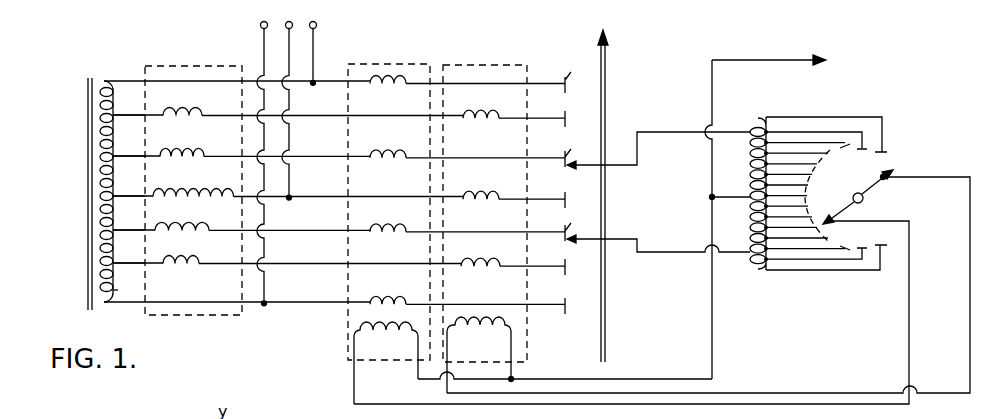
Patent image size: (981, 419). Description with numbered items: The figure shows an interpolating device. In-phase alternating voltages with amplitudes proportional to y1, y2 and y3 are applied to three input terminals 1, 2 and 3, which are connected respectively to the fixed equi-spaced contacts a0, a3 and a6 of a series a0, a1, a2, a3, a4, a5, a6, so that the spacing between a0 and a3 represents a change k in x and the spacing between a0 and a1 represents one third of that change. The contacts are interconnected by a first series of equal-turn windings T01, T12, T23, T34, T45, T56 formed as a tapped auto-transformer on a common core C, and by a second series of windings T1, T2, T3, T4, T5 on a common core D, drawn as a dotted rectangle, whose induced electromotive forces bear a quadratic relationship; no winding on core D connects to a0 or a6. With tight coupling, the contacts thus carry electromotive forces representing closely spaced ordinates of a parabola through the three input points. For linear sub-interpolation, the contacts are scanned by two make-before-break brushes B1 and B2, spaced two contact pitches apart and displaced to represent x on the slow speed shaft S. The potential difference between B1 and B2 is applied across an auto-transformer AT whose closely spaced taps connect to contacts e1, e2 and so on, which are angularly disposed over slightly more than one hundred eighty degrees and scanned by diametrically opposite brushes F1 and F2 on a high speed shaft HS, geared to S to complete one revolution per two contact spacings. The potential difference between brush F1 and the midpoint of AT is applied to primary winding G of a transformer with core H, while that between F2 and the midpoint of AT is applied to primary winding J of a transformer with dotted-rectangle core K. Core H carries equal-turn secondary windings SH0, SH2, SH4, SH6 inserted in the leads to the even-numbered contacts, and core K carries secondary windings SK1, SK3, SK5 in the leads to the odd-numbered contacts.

The common core C is at (86, 292).
The common core D is at (196, 316).
The transformer winding T56 is at (110, 114).
The transformer winding T45 is at (110, 152).
The transformer winding T34 is at (110, 191).
The transformer winding T23 is at (110, 226).
The transformer winding T12 is at (110, 259).
The transformer winding T01 is at (110, 296).
The transformer winding T5 is at (182, 112).
The transformer winding T4 is at (182, 151).
The transformer winding T3 is at (182, 190).
The transformer winding T2 is at (180, 226).
The transformer winding T1 is at (185, 260).
The input terminal 1 is at (260, 29).
The input terminal 2 is at (288, 29).
The input terminal 3 is at (315, 29).
The alternating voltage amplitude y1 is at (273, 26).
The alternating voltage amplitude y2 is at (298, 26).
The alternating voltage amplitude y3 is at (322, 26).
The transformer core H is at (345, 316).
The secondary winding SH6 is at (406, 76).
The secondary winding SH4 is at (388, 142).
The secondary winding SH2 is at (388, 218).
The secondary winding SH0 is at (388, 289).
The transformer core K is at (530, 337).
The secondary winding SK5 is at (481, 106).
The secondary winding SK3 is at (481, 183).
The secondary winding SK1 is at (480, 252).
The fixed contact a6 is at (577, 74).
The fixed contact a5 is at (577, 120).
The fixed contact a4 is at (577, 152).
The fixed contact a3 is at (576, 202).
The fixed contact a2 is at (576, 228).
The fixed contact a1 is at (576, 264).
The fixed contact a0 is at (576, 307).
The brush B2 is at (658, 163).
The brush B1 is at (658, 251).
The slow speed shaft S is at (606, 343).
The independent variable x is at (610, 36).
The primary winding G is at (363, 345).
The primary winding J is at (485, 337).
The auto-transformer AT is at (752, 165).
The high speed shaft HS is at (863, 192).
The brush F1 is at (828, 215).
The brush F2 is at (903, 162).
The contact e1 is at (882, 247).
The contact e2 is at (863, 248).